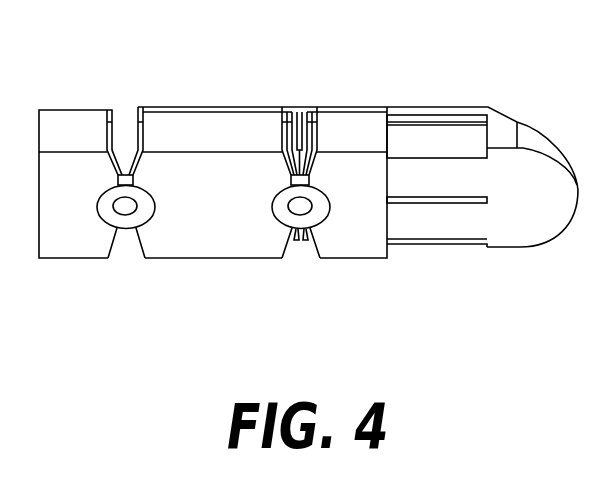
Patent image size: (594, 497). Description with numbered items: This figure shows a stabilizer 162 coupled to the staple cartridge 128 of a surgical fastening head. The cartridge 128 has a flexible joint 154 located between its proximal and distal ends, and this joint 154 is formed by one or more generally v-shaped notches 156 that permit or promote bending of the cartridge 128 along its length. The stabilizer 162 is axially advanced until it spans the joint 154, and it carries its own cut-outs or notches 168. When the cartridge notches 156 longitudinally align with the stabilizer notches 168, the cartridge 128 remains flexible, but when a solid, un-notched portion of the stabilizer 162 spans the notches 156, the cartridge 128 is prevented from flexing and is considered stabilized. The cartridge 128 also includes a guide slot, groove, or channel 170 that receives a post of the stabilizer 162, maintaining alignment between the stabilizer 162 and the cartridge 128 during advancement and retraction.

The cartridge 128 is at (410, 107).
The flexible joint 154 is at (297, 257).
The notches 156 is at (301, 108).
The stabilizer 162 is at (338, 222).
The notches 168 is at (113, 108).
The channel 170 is at (445, 203).